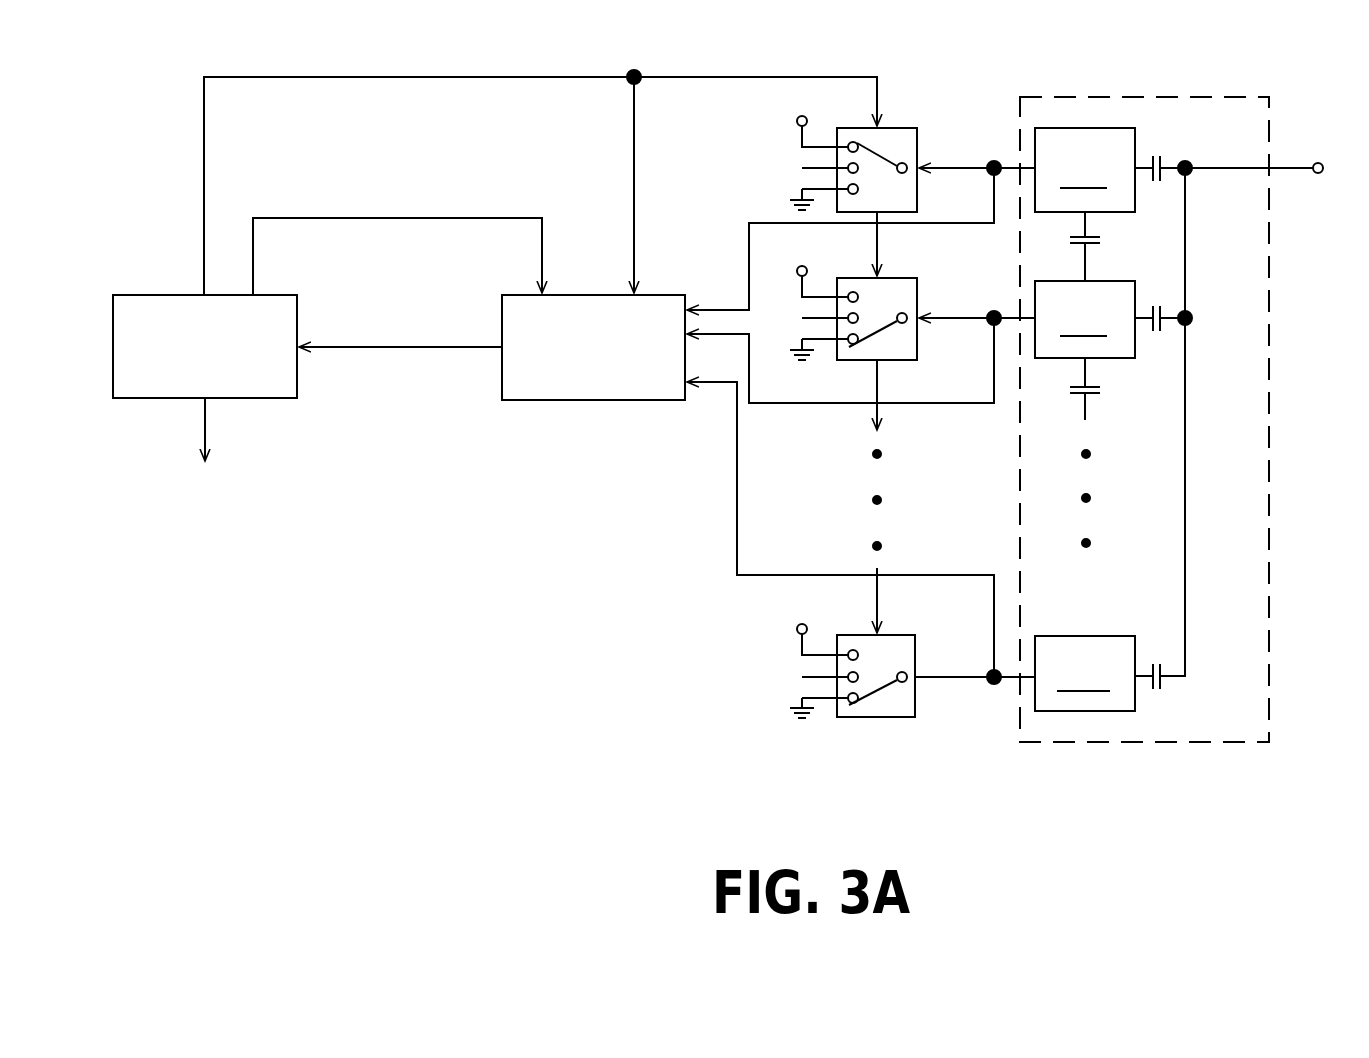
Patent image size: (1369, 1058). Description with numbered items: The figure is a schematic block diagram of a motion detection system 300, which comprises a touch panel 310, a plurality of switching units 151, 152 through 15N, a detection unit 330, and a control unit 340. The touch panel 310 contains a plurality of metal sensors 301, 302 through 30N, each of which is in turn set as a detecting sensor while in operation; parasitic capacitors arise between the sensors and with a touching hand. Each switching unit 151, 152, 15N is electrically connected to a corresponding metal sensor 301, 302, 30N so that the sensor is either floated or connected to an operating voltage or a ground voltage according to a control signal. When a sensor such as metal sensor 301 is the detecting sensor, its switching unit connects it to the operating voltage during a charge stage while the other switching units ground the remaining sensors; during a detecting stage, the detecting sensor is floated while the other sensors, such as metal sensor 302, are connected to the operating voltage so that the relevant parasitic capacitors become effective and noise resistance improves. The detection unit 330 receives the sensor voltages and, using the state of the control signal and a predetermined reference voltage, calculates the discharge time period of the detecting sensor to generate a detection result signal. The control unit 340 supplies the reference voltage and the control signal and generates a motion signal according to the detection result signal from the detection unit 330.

The motion detection system 300 is at (136, 764).
The touch panel 310 is at (1145, 97).
The metal sensor 301 is at (1085, 170).
The metal sensor 302 is at (1085, 319).
The metal sensor 30N is at (1085, 673).
The switching unit 151 is at (908, 127).
The switching unit 152 is at (917, 288).
The switching unit 15N is at (915, 633).
The detection unit 330 is at (595, 401).
The control unit 340 is at (125, 293).